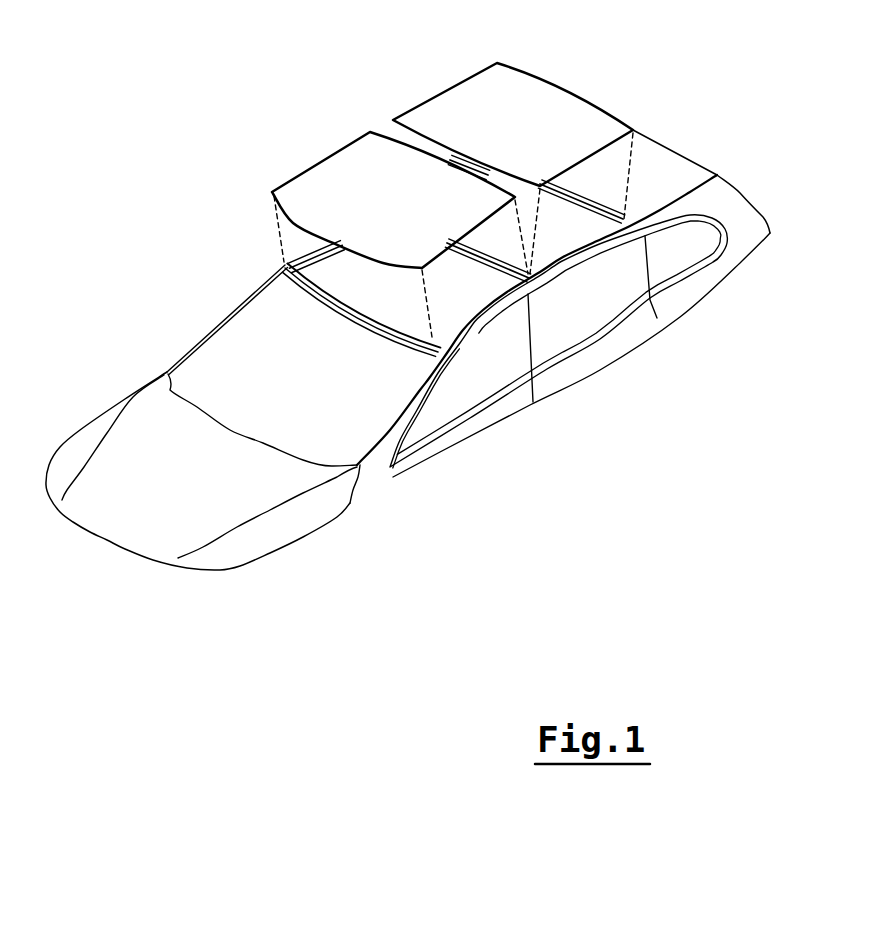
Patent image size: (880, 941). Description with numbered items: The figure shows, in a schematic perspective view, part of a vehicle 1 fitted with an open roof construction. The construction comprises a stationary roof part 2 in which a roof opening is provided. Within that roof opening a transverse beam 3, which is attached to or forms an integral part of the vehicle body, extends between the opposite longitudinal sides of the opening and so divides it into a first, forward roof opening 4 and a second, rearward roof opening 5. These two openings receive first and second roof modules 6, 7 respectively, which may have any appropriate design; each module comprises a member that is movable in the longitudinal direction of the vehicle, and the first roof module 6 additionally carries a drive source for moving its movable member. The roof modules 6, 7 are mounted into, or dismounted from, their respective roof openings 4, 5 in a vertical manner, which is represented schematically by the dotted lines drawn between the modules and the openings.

The vehicle 1 is at (368, 480).
The stationary roof part 2 is at (691, 171).
The transverse beam 3 is at (484, 260).
The first, forward roof opening 4 is at (337, 281).
The second, rearward roof opening 5 is at (566, 216).
The first roof module 6 is at (338, 173).
The second roof module 7 is at (470, 97).